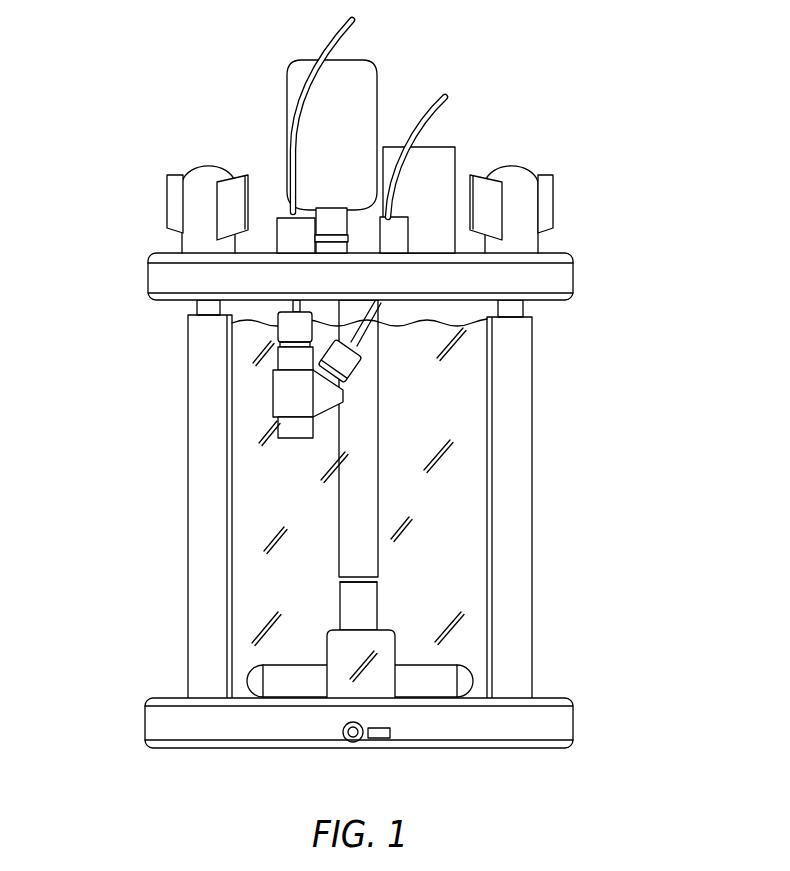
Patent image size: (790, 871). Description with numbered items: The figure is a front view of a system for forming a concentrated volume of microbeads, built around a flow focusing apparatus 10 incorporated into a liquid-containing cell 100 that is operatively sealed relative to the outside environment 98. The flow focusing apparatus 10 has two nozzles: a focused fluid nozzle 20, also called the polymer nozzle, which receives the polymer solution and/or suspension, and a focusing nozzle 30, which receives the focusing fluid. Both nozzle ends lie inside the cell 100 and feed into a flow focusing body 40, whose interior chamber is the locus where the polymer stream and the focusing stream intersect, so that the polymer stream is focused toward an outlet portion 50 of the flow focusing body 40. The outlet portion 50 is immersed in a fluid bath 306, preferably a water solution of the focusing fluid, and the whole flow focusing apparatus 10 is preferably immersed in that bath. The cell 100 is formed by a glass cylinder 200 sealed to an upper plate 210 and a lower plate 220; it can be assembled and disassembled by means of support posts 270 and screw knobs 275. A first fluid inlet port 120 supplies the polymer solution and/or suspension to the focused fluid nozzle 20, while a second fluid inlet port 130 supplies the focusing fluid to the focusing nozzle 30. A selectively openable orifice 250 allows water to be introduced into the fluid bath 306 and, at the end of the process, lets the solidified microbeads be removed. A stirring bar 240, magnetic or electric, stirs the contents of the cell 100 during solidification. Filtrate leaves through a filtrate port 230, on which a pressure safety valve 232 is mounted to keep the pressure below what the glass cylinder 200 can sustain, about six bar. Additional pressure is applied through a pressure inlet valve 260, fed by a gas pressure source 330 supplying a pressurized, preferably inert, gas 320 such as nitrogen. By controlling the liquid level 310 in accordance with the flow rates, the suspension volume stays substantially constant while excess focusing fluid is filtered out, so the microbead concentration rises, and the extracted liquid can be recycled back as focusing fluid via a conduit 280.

The flow focusing apparatus 10 is at (356, 499).
The focused fluid nozzle 20 is at (278, 318).
The focusing nozzle 30 is at (336, 412).
The flow focusing body 40 is at (290, 387).
The outlet portion 50 is at (295, 430).
The outside environment 98 is at (161, 89).
The liquid-containing cell 100 is at (374, 405).
The fluid inlet port 120 is at (293, 238).
The fluid inlet port 130 is at (393, 236).
The glass cylinder 200 is at (252, 515).
The upper plate 210 is at (165, 275).
The lower plate 220 is at (530, 722).
The filtrate port 230 is at (353, 745).
The pressure safety valve 232 is at (376, 743).
The stirring bar 240 is at (430, 680).
The selectively openable orifice 250 is at (430, 178).
The pressure inlet valve 260 is at (327, 227).
The support posts 270 is at (197, 617).
The screw knobs 275 is at (198, 200).
The conduit 280 is at (443, 97).
The fluid bath 306 is at (457, 508).
The liquid level 310 is at (410, 327).
The pressurized gas 320 is at (445, 317).
The gas pressure source 330 is at (346, 90).